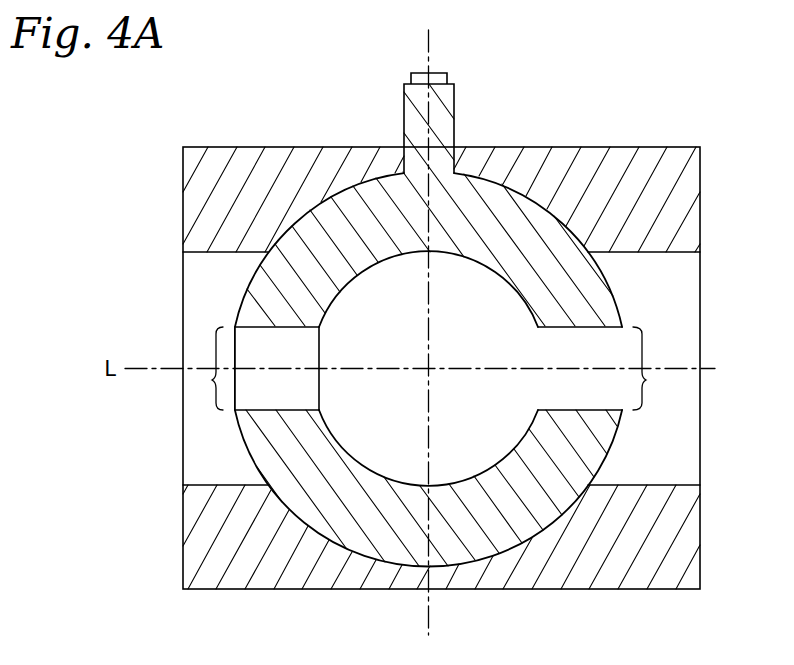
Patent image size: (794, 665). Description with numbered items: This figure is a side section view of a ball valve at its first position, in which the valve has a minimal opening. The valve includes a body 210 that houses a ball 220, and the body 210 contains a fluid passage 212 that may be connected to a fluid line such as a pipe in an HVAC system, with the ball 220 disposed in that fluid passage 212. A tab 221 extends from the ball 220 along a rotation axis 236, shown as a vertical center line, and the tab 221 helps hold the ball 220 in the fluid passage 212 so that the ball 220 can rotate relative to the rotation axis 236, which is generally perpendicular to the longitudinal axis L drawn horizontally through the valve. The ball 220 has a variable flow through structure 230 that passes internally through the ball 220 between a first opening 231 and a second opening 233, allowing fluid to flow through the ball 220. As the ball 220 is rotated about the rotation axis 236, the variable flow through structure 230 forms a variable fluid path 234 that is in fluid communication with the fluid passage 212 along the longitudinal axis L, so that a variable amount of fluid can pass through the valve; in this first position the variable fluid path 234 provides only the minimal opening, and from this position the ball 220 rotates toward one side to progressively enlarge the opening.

The body 210 is at (276, 168).
The fluid passage 212 is at (205, 292).
The ball 220 is at (568, 148).
The tab 221 is at (455, 105).
The variable flow through structure 230 is at (362, 423).
The first opening 231 is at (603, 323).
The second opening 233 is at (255, 410).
The variable fluid path 234 is at (212, 380).
The rotation axis 236 is at (429, 627).